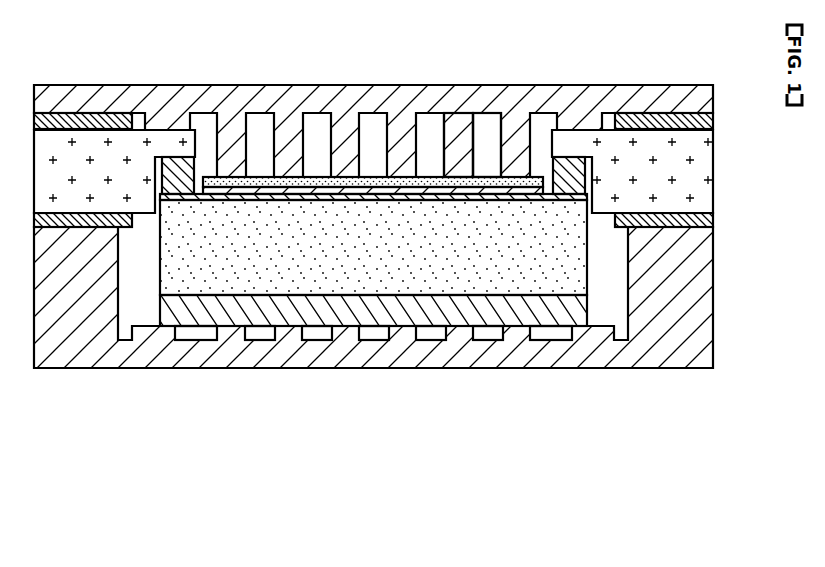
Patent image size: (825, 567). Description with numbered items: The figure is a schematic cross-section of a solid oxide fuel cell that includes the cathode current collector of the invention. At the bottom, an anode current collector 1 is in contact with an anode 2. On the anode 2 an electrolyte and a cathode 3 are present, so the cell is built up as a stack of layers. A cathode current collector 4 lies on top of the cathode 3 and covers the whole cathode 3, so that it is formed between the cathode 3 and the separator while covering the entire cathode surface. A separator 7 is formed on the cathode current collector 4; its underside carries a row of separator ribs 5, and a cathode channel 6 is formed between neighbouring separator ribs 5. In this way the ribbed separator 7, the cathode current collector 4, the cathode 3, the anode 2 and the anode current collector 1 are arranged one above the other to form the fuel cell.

The anode current collector 1 is at (450, 308).
The anode 2 is at (315, 270).
The cathode 3 is at (297, 193).
The cathode current collector 4 is at (370, 187).
The separator rib 5 is at (460, 138).
The cathode channel 6 is at (485, 143).
The separator 7 is at (232, 122).